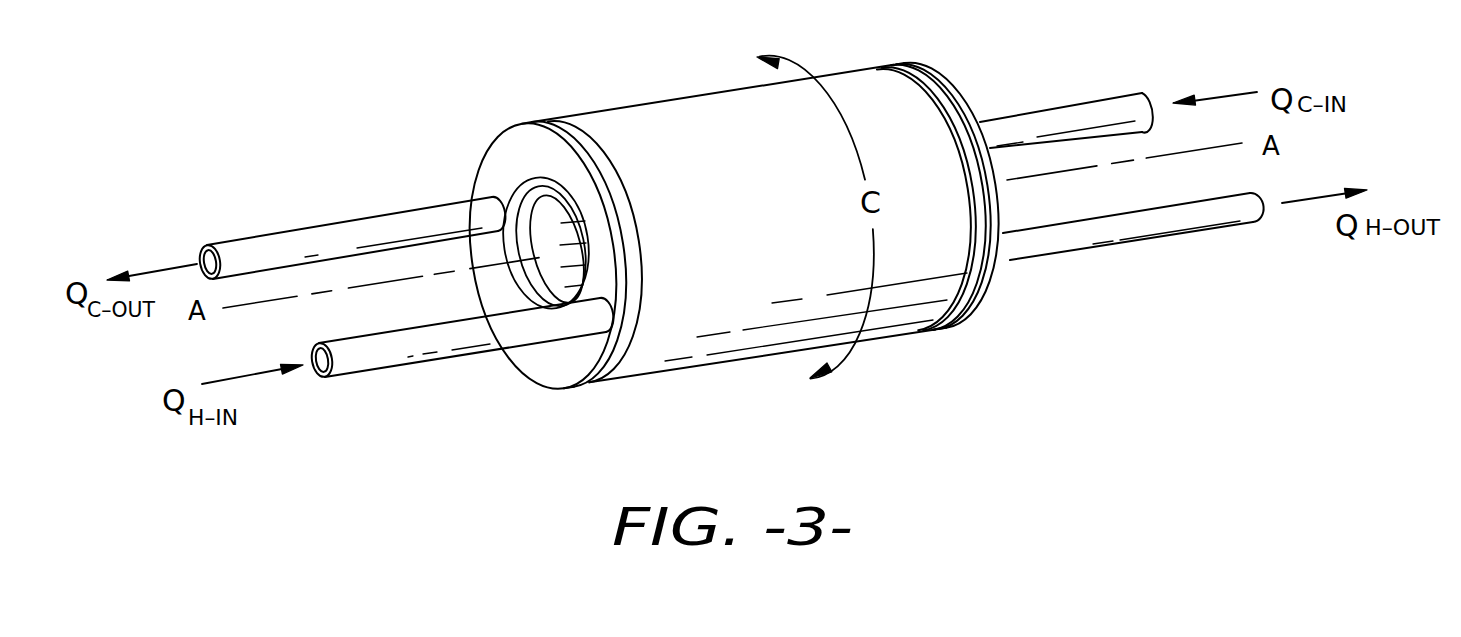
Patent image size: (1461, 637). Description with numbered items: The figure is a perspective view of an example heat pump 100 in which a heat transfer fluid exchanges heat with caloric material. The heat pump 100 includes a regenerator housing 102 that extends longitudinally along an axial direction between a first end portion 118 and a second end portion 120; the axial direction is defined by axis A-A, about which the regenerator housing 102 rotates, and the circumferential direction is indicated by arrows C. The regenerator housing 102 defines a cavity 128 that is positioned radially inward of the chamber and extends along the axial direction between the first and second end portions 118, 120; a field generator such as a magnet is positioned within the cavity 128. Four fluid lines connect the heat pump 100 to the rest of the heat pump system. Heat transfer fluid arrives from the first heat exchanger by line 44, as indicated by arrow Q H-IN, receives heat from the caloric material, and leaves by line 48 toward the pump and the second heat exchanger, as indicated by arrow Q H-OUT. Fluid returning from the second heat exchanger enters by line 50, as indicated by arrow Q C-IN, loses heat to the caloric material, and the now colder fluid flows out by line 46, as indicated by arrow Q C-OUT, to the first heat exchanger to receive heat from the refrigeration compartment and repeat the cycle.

The heat pump 100 is at (416, 140).
The regenerator housing 102 is at (885, 107).
The first end portion 118 is at (593, 88).
The second end portion 120 is at (938, 346).
The cavity 128 is at (535, 275).
The line 44 is at (363, 352).
The line 46 is at (328, 237).
The line 48 is at (1162, 222).
The line 50 is at (1057, 118).